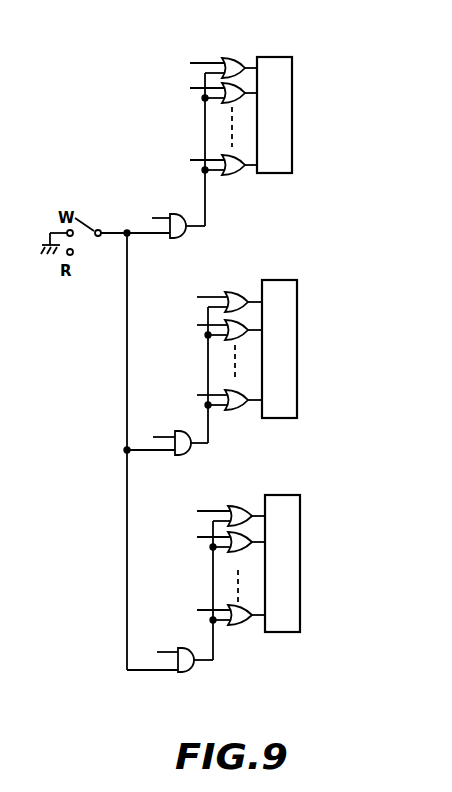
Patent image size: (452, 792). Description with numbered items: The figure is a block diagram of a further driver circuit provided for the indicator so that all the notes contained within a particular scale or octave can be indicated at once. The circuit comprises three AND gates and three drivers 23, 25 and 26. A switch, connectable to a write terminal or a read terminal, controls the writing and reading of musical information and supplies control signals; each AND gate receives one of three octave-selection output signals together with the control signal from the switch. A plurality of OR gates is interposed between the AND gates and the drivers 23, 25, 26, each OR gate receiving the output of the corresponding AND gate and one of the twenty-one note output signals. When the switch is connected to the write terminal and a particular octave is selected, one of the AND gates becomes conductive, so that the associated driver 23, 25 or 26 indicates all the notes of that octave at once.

The driver 23 is at (267, 67).
The driver 25 is at (277, 293).
The driver 26 is at (278, 507).